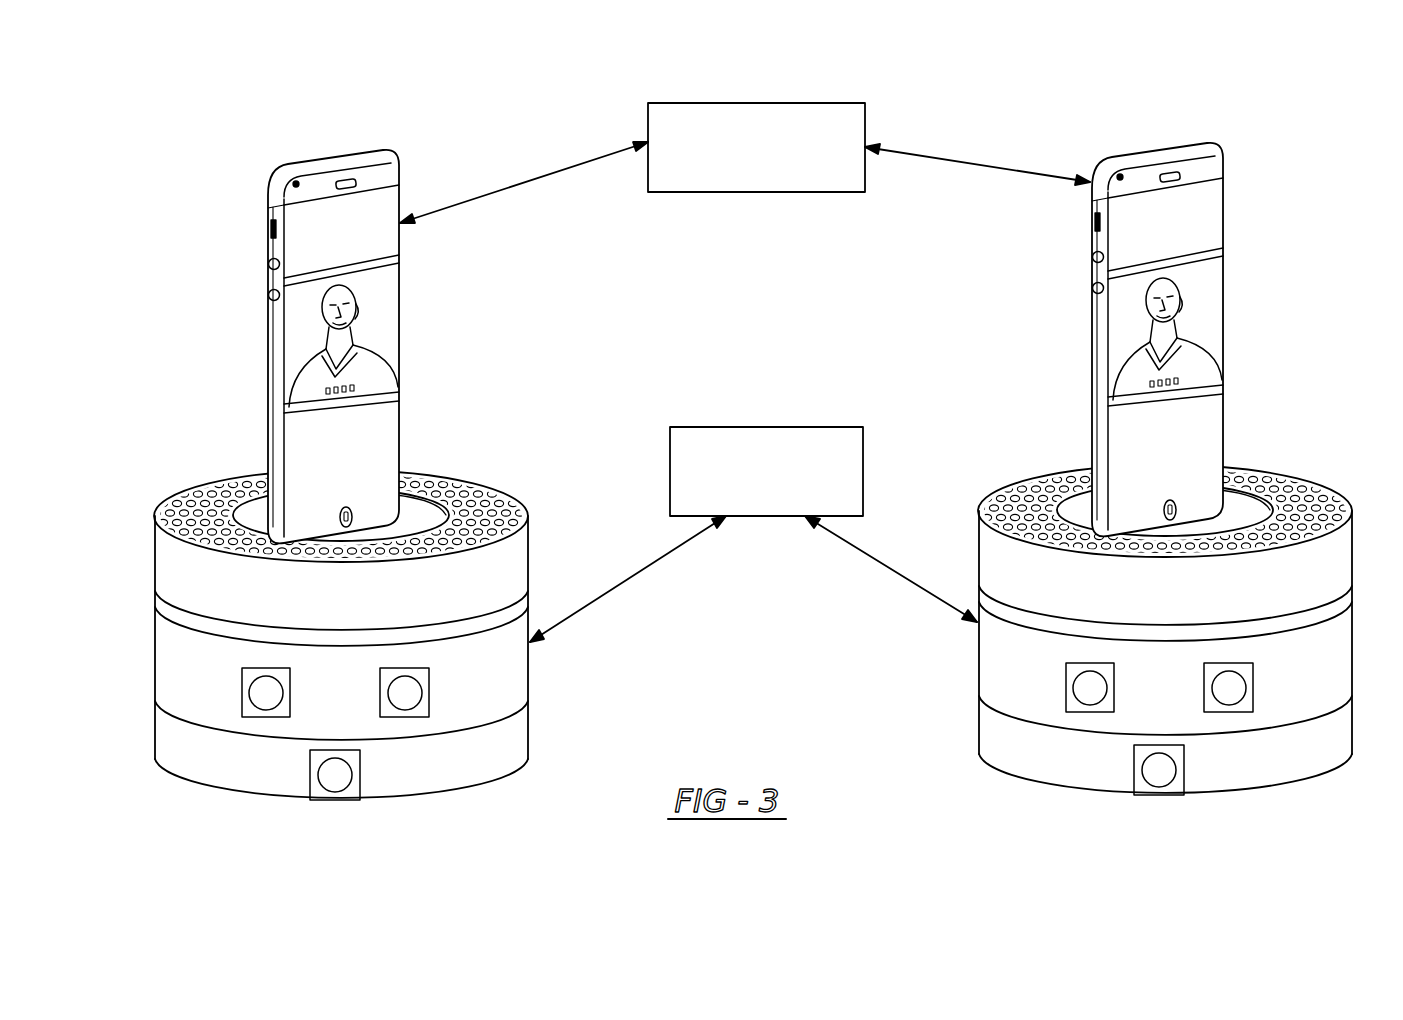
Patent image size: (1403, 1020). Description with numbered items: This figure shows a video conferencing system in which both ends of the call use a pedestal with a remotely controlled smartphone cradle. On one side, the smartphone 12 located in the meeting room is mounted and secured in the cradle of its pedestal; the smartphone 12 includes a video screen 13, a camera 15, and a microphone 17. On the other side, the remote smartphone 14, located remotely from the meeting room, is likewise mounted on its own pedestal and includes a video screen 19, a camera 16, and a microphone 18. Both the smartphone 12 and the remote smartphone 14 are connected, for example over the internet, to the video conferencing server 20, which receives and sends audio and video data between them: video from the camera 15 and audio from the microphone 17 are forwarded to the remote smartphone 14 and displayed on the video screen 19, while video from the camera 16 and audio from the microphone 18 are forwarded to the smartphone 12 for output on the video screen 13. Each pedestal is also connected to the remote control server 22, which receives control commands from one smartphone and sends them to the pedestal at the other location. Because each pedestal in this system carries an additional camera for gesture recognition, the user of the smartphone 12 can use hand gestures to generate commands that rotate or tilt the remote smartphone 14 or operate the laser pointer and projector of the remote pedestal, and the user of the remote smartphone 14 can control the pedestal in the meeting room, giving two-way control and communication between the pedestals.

The smartphone 12 is at (1195, 312).
The video screen 13 is at (1177, 223).
The remote smartphone 14 is at (417, 316).
The camera 15 is at (1116, 176).
The camera 16 is at (292, 183).
The microphone 17 is at (1207, 498).
The microphone 18 is at (385, 500).
The video screen 19 is at (373, 432).
The video conferencing server 20 is at (772, 103).
The remote control server 22 is at (745, 427).